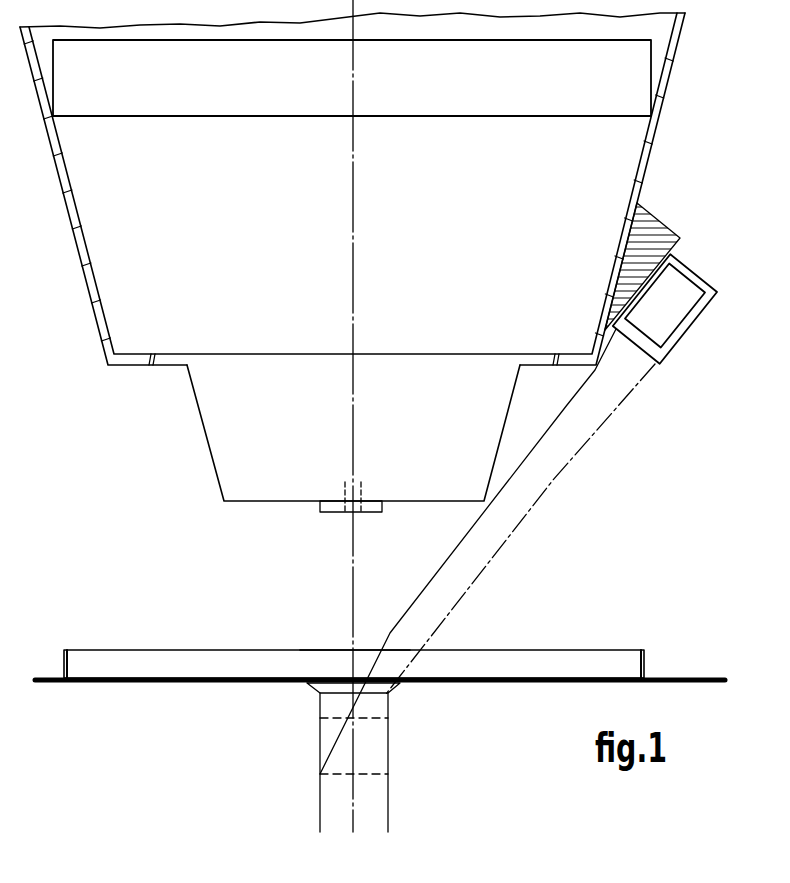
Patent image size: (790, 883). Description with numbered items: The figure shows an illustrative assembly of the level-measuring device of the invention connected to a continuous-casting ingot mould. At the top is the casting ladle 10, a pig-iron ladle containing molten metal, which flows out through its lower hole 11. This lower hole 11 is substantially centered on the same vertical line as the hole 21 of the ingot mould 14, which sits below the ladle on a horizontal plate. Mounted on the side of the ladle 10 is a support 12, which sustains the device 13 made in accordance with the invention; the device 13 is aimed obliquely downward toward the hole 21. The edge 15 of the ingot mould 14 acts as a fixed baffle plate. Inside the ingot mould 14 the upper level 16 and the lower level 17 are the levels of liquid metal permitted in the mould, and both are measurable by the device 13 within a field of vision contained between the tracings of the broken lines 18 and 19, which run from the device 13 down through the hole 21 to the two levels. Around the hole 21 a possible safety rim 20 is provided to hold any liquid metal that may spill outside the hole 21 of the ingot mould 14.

The casting ladle 10 is at (620, 170).
The lower hole 11 is at (341, 525).
The support 12 is at (652, 226).
The device 13 is at (681, 299).
The ingot mould 14 is at (401, 802).
The edge of the ingot mould 15 is at (398, 702).
The upper level 16 is at (312, 718).
The lower level 17 is at (312, 774).
The broken line 18 is at (567, 404).
The broken line 19 is at (609, 440).
The safety rim 20 is at (647, 660).
The hole of the ingot mould 21 is at (350, 638).